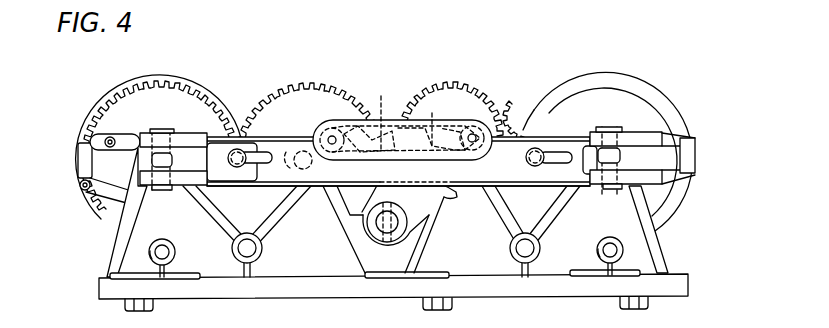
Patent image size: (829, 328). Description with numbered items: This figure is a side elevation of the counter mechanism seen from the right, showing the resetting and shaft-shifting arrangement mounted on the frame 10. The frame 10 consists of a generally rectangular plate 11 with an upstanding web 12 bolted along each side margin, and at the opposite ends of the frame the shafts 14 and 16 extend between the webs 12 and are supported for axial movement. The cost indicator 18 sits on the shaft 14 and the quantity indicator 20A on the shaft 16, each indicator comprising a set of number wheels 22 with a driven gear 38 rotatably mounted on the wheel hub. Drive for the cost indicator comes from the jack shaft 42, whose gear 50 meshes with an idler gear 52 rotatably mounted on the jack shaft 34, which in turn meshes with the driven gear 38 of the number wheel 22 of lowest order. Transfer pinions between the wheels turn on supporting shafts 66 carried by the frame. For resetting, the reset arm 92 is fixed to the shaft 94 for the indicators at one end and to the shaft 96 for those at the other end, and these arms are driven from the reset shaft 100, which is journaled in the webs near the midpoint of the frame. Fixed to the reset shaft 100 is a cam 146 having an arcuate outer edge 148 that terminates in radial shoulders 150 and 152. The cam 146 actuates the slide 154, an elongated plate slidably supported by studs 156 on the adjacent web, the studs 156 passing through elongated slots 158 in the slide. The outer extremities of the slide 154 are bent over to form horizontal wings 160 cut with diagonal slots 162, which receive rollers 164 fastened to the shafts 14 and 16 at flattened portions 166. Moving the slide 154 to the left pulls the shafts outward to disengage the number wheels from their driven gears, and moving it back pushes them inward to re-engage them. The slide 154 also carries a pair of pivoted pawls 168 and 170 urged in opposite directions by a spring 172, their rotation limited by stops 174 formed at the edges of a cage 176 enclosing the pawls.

The frame 10 is at (695, 293).
The plate 11 is at (674, 273).
The web 12 is at (650, 241).
The shaft 14 is at (160, 170).
The shaft 16 is at (610, 170).
The cost indicator 18 is at (91, 107).
The quantity indicator 20A is at (688, 101).
The number wheel 22 is at (114, 91).
The jack shaft 34 is at (262, 177).
The driven gear 38 is at (191, 89).
The jack shaft 42 is at (398, 161).
The gear 50 is at (435, 90).
The idler gear 52 is at (313, 87).
The supporting shaft 66 is at (152, 251).
The reset arm 92 is at (502, 101).
The shaft 94 is at (245, 262).
The shaft 96 is at (512, 248).
The reset shaft 100 is at (381, 224).
The cam 146 is at (371, 238).
The arcuate outer edge 148 is at (437, 168).
The radial shoulder 150 is at (351, 226).
The radial shoulder 152 is at (453, 200).
The slide 154 is at (532, 110).
The stud 156 is at (237, 149).
The elongated slot 158 is at (262, 177).
The horizontal wing 160 is at (193, 140).
The diagonal slot 162 is at (187, 187).
The roller 164 is at (150, 155).
The flattened portion 166 is at (161, 131).
The pawl 168 is at (353, 163).
The pawl 170 is at (435, 121).
The spring 172 is at (382, 114).
The stop 174 is at (335, 126).
The cage 176 is at (318, 132).